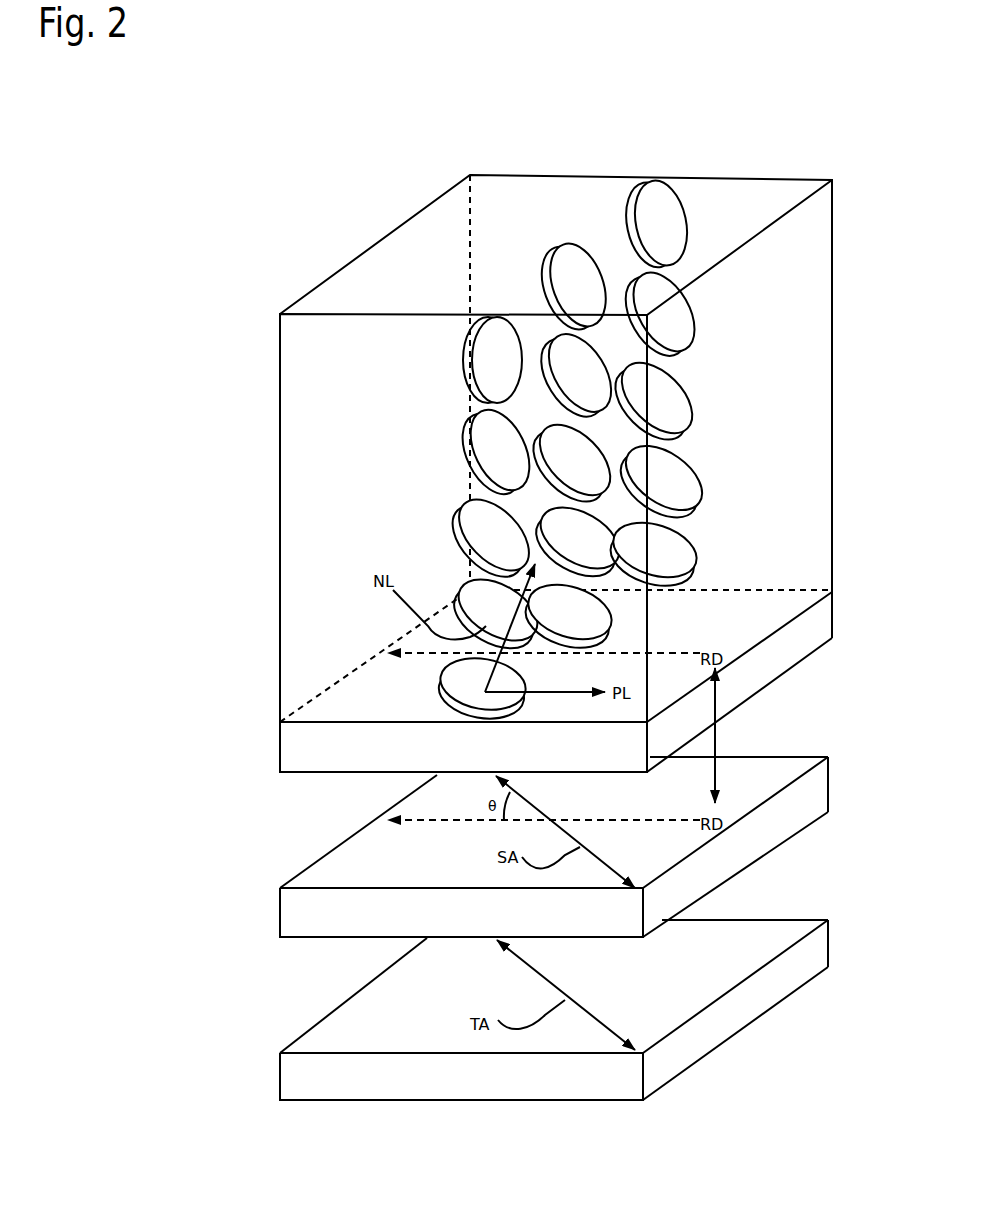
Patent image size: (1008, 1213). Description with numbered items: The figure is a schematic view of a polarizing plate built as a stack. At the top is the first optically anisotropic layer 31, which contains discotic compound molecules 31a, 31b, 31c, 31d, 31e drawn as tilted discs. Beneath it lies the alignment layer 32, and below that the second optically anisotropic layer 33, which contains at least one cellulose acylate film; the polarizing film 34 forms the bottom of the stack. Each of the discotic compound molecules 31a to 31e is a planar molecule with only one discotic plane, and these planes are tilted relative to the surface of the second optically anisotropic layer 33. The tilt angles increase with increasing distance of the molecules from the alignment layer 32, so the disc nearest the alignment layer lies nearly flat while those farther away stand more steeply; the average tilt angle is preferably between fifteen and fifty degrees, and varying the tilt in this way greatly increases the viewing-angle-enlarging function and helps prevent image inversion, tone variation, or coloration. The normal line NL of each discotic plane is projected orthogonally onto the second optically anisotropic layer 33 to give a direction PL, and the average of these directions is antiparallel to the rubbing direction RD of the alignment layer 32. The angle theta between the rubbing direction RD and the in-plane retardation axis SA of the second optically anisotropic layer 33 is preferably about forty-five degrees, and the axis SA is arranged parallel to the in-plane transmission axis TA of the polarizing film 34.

The optically anisotropic layer (1) 31 is at (581, 450).
The discotic compound molecule 31a is at (492, 360).
The discotic compound molecule 31b is at (496, 451).
The discotic compound molecule 31c is at (491, 538).
The discotic compound molecule 31d is at (496, 614).
The discotic compound molecule 31e is at (482, 688).
The alignment layer 32 is at (760, 670).
The optically anisotropic layer (2) 33 is at (757, 828).
The polarizing film 34 is at (757, 985).